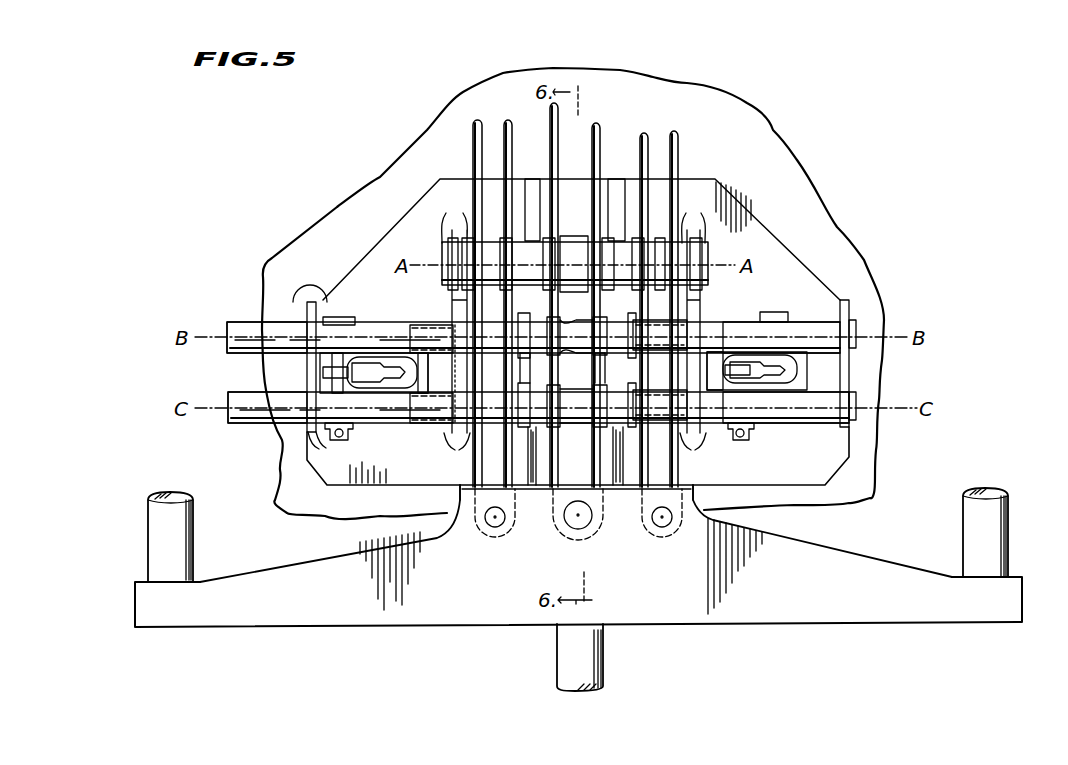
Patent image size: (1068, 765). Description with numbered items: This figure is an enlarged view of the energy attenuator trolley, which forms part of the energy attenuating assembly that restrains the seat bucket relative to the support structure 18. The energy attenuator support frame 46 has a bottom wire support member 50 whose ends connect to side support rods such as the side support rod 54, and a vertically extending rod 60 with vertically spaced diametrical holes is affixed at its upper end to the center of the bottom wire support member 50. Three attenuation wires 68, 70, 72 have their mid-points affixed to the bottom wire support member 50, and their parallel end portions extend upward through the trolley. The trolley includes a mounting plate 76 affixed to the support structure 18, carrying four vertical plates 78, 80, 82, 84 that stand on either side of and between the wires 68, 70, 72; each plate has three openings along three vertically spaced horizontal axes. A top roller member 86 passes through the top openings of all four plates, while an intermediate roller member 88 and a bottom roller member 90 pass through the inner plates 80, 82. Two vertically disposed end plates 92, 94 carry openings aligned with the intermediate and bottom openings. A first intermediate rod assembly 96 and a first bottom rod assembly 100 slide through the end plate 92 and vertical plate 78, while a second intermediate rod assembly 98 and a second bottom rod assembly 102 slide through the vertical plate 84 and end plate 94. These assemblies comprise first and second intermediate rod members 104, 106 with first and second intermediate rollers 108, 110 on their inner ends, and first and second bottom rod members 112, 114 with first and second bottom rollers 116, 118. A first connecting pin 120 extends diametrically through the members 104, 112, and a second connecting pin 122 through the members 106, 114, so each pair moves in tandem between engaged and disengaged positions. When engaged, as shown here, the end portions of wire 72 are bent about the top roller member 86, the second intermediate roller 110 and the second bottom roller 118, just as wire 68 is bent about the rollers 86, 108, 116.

The support structure 18 is at (745, 110).
The energy attenuator support frame 46 is at (160, 527).
The bottom wire support member 50 is at (825, 603).
The side support rod 54 is at (990, 511).
The vertically extending rod 60 is at (585, 665).
The attenuation wire 68 is at (474, 142).
The attenuation wire 70 is at (597, 126).
The attenuation wire 72 is at (677, 140).
The mounting plate 76 is at (390, 232).
The vertical plate 78 is at (460, 447).
The vertical plate 80 is at (537, 490).
The vertical plate 82 is at (620, 490).
The vertical plate 84 is at (700, 220).
The top roller member 86 is at (440, 215).
The intermediate roller member 88 is at (598, 318).
The bottom roller member 90 is at (583, 433).
The end plate 92 is at (310, 346).
The end plate 94 is at (848, 300).
The first intermediate rod assembly 96 is at (245, 363).
The second intermediate rod assembly 98 is at (801, 309).
The first bottom rod assembly 100 is at (283, 436).
The second bottom rod assembly 102 is at (824, 433).
The first intermediate rod member 104 is at (238, 322).
The second intermediate rod member 106 is at (857, 340).
The first intermediate roller 108 is at (437, 325).
The second intermediate roller 110 is at (668, 320).
The first bottom rod member 112 is at (230, 415).
The second bottom rod member 114 is at (857, 410).
The first bottom roller 116 is at (422, 415).
The second bottom roller 118 is at (667, 420).
The first connecting pin 120 is at (333, 440).
The second connecting pin 122 is at (740, 441).